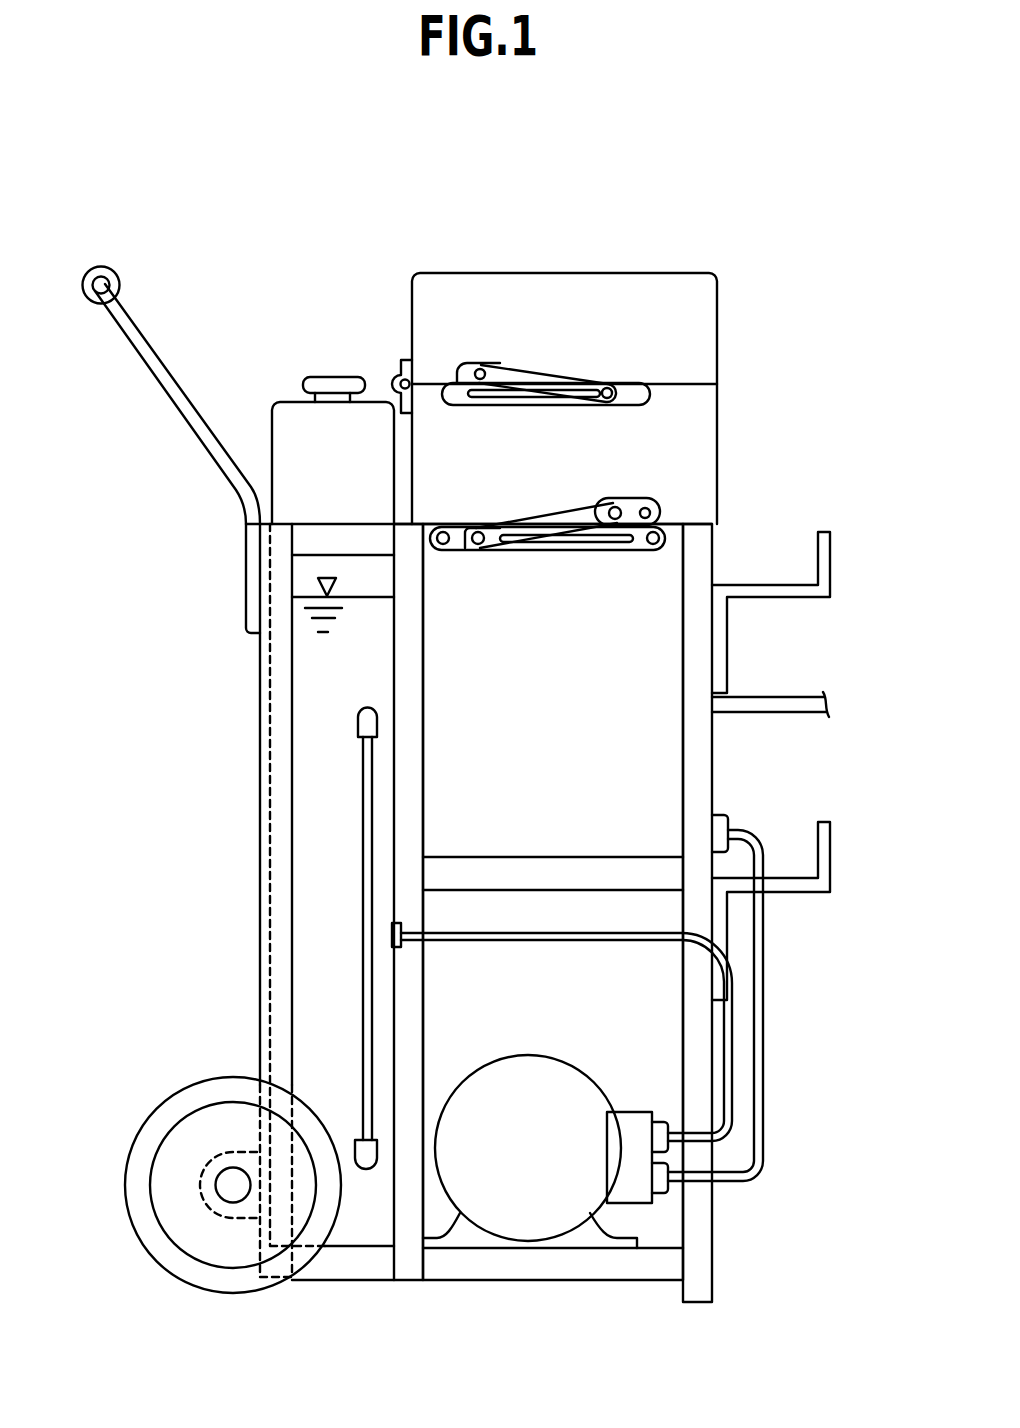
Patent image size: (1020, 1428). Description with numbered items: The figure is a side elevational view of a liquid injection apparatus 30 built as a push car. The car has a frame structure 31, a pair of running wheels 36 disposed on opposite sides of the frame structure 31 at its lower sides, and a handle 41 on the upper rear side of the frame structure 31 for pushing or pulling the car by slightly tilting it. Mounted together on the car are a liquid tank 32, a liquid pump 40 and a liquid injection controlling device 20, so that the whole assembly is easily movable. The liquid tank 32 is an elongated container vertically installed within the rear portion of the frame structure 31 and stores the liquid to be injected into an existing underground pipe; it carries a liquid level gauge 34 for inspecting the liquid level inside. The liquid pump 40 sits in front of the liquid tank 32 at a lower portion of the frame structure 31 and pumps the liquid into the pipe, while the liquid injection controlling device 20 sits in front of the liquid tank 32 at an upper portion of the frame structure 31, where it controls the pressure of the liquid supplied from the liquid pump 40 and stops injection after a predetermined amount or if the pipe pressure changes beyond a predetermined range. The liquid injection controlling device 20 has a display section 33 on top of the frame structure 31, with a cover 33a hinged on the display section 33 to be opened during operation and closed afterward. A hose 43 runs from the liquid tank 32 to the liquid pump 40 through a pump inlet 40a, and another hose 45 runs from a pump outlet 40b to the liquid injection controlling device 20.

The liquid injection controlling device 20 is at (652, 748).
The liquid injection apparatus 30 is at (461, 262).
The frame structure 31 is at (280, 700).
The liquid tank 32 is at (328, 658).
The display section 33 is at (692, 425).
The cover 33a is at (688, 320).
The liquid level gauge 34 is at (365, 820).
The running wheels 36 is at (148, 1152).
The liquid pump 40 is at (515, 1217).
The pump inlet 40a is at (662, 1132).
The pump outlet 40b is at (660, 1182).
The handle 41 is at (128, 335).
The hose 43 is at (483, 935).
The hose 45 is at (757, 1025).